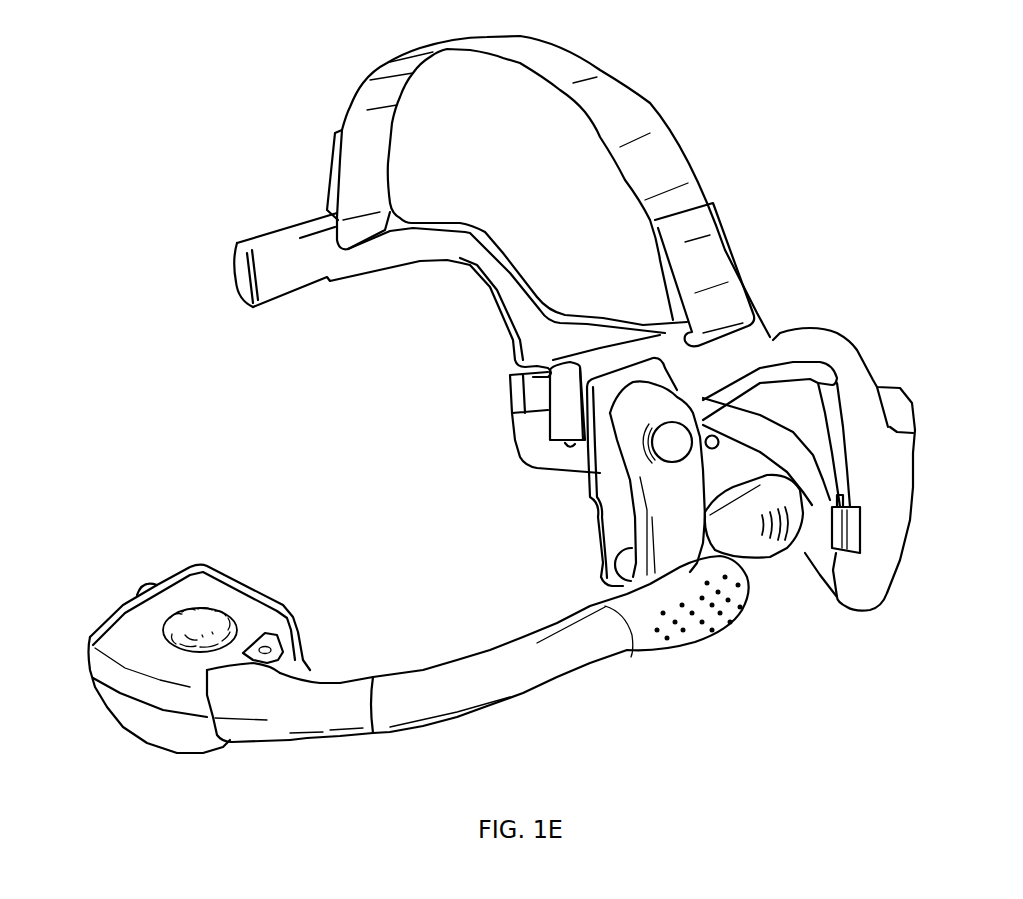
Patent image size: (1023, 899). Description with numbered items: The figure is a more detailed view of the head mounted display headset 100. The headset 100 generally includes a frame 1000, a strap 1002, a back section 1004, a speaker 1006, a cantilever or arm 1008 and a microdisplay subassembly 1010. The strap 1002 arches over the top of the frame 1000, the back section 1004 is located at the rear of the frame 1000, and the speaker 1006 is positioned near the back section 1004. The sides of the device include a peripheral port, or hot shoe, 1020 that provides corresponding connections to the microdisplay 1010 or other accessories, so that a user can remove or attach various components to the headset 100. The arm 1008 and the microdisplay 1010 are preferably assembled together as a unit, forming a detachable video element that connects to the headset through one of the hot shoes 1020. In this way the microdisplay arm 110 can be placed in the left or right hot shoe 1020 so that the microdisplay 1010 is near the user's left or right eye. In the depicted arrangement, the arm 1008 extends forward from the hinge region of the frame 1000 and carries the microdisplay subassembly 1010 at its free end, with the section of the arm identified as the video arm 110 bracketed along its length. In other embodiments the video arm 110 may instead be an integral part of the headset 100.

The head mounted display headset 100 is at (212, 78).
The strap 1002 is at (647, 105).
The frame 1000 is at (285, 298).
The peripheral port hot shoe 1020 is at (242, 277).
The back section 1004 is at (915, 478).
The speaker 1006 is at (773, 560).
The cantilever or arm 1008 is at (533, 692).
The microdisplay subassembly 1010 is at (223, 565).
The microdisplay arm 110 is at (508, 728).